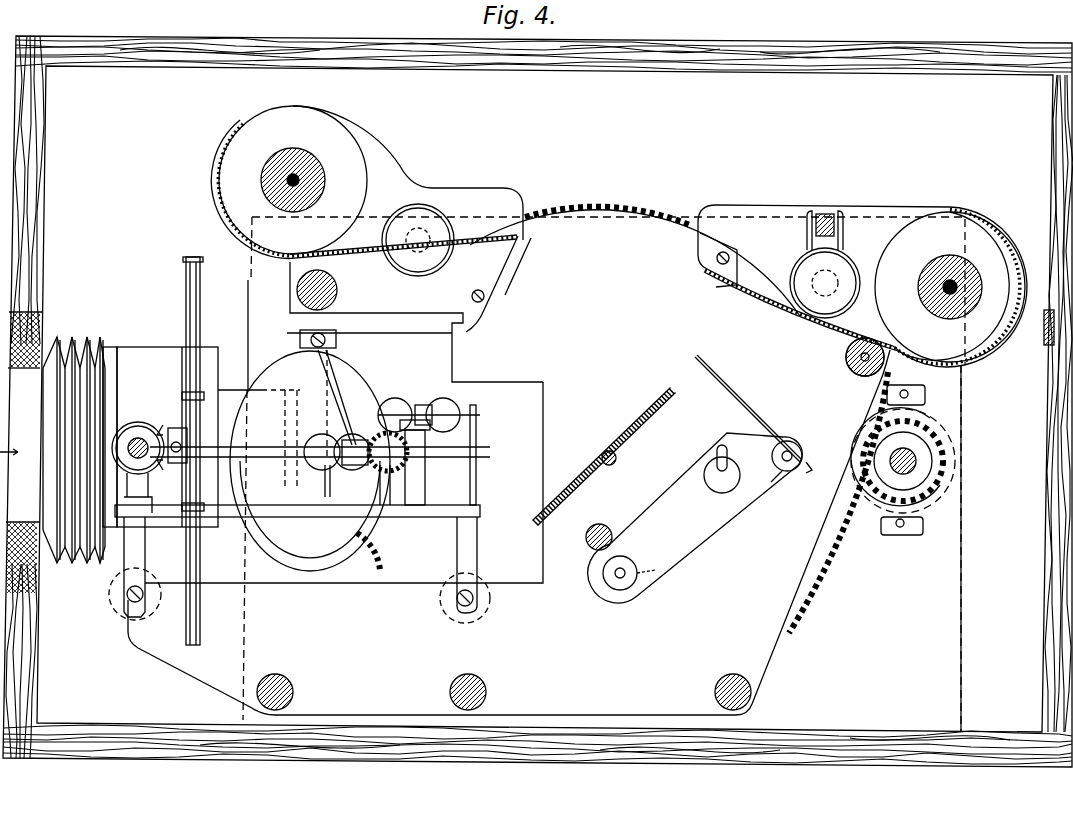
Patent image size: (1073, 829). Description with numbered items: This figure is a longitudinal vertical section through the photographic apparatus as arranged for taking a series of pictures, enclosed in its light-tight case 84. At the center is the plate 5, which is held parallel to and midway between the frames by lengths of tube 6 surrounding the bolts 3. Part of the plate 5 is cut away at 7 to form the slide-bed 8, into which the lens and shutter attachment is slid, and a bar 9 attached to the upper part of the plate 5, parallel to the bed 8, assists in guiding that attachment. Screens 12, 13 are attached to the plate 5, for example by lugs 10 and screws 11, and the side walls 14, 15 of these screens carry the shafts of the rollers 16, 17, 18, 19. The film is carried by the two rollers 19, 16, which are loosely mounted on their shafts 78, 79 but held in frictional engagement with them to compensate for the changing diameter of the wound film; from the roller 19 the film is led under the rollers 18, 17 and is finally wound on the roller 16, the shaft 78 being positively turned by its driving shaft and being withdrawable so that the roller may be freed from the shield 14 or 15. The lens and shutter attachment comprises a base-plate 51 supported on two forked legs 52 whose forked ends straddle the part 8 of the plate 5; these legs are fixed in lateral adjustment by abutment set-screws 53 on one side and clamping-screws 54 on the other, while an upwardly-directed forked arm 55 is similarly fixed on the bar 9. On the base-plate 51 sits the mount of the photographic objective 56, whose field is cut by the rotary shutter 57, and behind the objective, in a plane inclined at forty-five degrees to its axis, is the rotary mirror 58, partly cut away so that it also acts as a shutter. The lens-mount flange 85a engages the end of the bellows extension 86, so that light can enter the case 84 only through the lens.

The bolts 3 is at (850, 356).
The plate 5 is at (509, 461).
The lengths of tube 6 is at (860, 372).
The cut-away part of plate 7 is at (535, 473).
The slide-bed 8 is at (420, 590).
The bar 9 is at (438, 344).
The lugs 10 is at (500, 275).
The screws 11 is at (484, 297).
The screen 12 is at (340, 262).
The screen 13 is at (992, 352).
The side walls of screen 14 is at (428, 186).
The side walls of screen 15 is at (888, 199).
The roller 16 is at (324, 190).
The roller 17 is at (455, 239).
The roller 18 is at (843, 262).
The roller 19 is at (975, 298).
The base-plate 51 is at (472, 513).
The forked legs 52 is at (146, 554).
The abutment set-screws 53 is at (145, 596).
The clamping-screws 54 is at (117, 607).
The forked arm 55 is at (294, 367).
The photographic objective 56 is at (167, 437).
The rotary shutter 57 is at (203, 554).
The rotary mirror 58 is at (392, 374).
The shaft 78 is at (300, 176).
The shaft 79 is at (958, 285).
The light-tight case 84 is at (1052, 458).
The lens-mount flange 85a is at (112, 347).
The bellows extension 86 is at (82, 345).